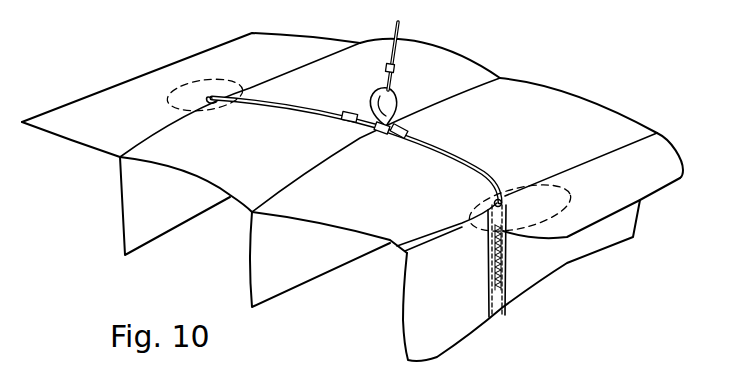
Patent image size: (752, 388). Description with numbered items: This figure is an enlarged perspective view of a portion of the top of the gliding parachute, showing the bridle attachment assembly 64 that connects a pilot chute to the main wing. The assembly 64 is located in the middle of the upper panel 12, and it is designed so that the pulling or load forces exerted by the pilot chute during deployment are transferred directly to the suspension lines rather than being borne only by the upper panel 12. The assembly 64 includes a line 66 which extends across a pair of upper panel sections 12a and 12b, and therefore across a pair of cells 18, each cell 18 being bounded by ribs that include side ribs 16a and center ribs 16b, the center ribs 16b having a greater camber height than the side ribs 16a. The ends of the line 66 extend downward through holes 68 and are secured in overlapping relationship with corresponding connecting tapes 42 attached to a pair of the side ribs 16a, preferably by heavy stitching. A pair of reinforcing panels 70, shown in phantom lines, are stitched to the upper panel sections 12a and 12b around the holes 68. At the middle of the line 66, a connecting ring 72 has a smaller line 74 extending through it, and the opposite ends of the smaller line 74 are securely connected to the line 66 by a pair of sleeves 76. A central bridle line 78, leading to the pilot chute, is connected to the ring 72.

The upper panel 12 is at (88, 91).
The upper panel section 12a is at (427, 53).
The upper panel section 12b is at (540, 92).
The side rib 16a is at (120, 200).
The center rib 16b is at (250, 245).
The cell 18 is at (228, 236).
The connecting tape 42 is at (502, 303).
The bridle attachment assembly 64 is at (438, 164).
The line 66 is at (472, 170).
The hole 68 is at (203, 102).
The reinforcing panel 70 is at (188, 82).
The connecting ring 72 is at (389, 106).
The smaller line 74 is at (401, 123).
The sleeve 76 is at (378, 131).
The central bridle line 78 is at (396, 30).